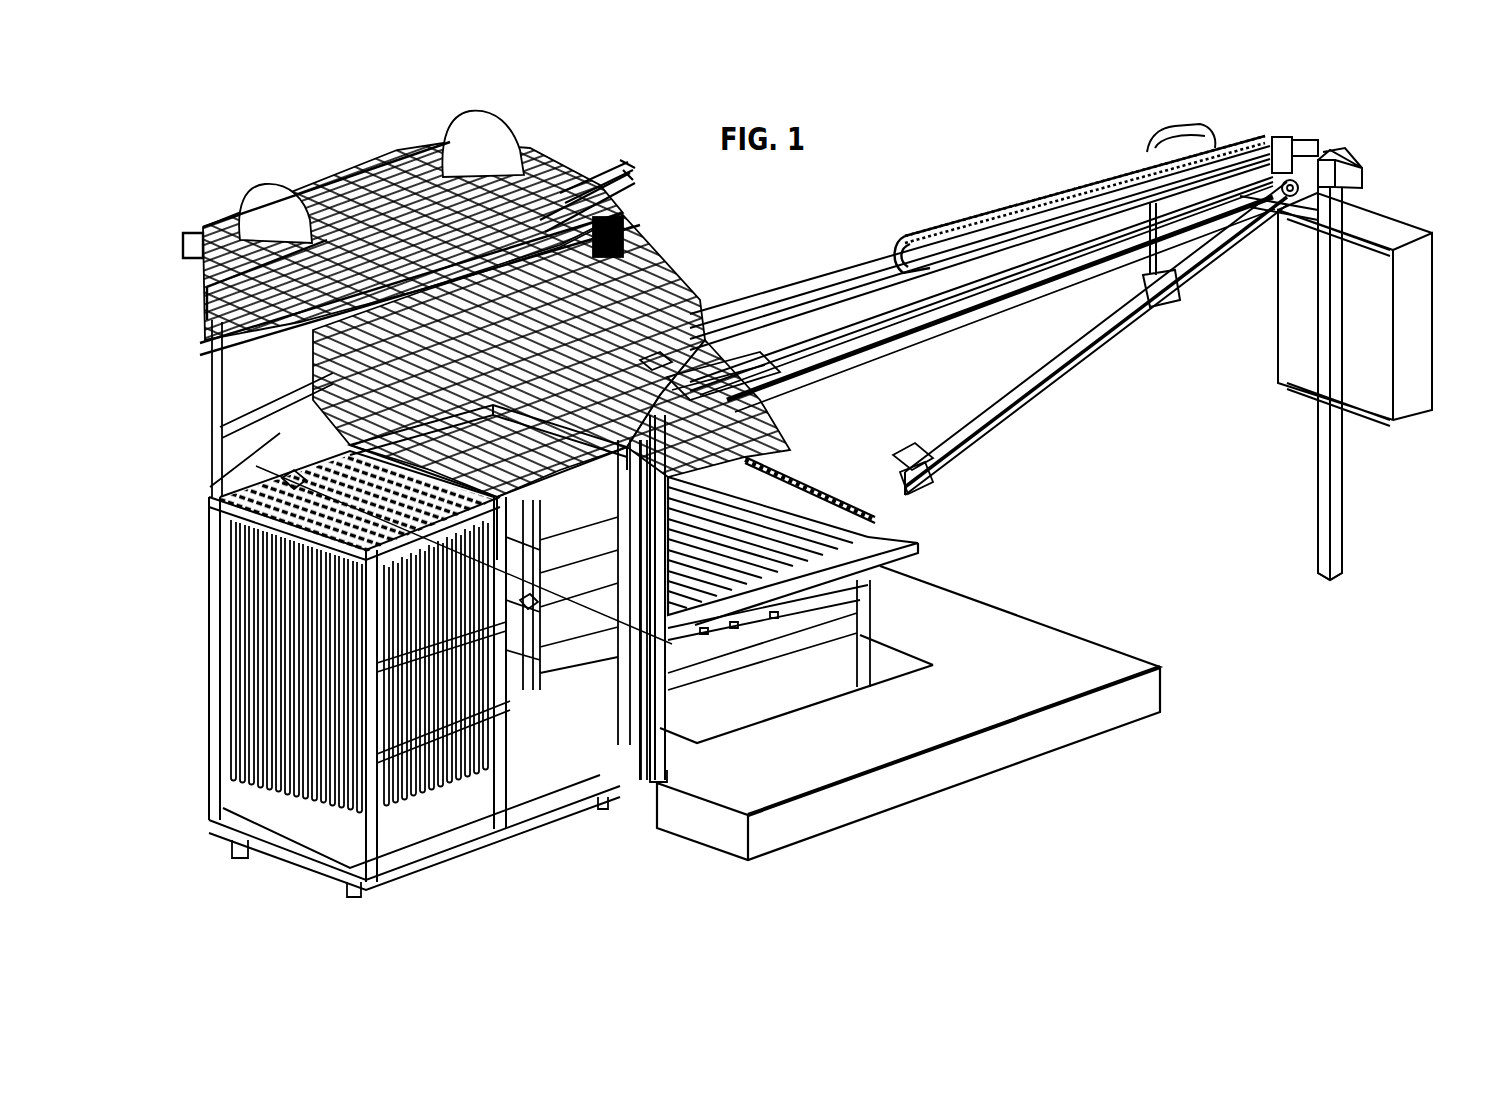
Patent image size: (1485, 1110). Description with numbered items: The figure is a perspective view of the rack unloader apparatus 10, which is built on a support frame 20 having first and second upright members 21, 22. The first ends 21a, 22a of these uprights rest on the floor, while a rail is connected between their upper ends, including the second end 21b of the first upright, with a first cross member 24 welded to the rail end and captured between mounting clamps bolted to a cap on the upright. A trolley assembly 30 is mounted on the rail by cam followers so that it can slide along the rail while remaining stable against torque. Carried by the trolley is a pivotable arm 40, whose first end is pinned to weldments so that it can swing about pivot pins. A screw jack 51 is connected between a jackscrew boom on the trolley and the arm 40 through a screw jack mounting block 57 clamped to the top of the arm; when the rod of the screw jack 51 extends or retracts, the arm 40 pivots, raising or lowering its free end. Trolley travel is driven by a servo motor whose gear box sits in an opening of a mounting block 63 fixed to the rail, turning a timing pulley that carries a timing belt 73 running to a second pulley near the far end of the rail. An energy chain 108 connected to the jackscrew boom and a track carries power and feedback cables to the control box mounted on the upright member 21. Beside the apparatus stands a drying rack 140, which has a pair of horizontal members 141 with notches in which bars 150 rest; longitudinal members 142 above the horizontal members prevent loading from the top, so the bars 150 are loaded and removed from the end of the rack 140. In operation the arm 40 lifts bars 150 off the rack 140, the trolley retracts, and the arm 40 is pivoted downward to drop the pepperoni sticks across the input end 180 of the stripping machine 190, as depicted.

The rack unloader apparatus 10 is at (998, 172).
The support frame 20 is at (1336, 350).
The first upright member 21 is at (1341, 511).
The first end of first upright member 21a is at (1318, 553).
The second end of first upright member 21b is at (1337, 213).
The second upright member 22 is at (665, 713).
The first end of second upright member 22a is at (660, 764).
The first cross member 24 is at (1348, 178).
The trolley assembly 30 is at (1182, 115).
The arm 40 is at (1062, 385).
The screw jack 51 is at (1128, 173).
The screw jack mounting block 57 is at (1143, 287).
The mounting block 63 is at (1281, 150).
The timing belt 73 is at (915, 332).
The energy chain 108 is at (933, 235).
The drying rack 140 is at (366, 832).
The horizontal members 141 is at (283, 490).
The longitudinal members 142 is at (668, 355).
The bars 150 is at (277, 477).
The input end 180 is at (517, 564).
The stripping machine 190 is at (567, 178).